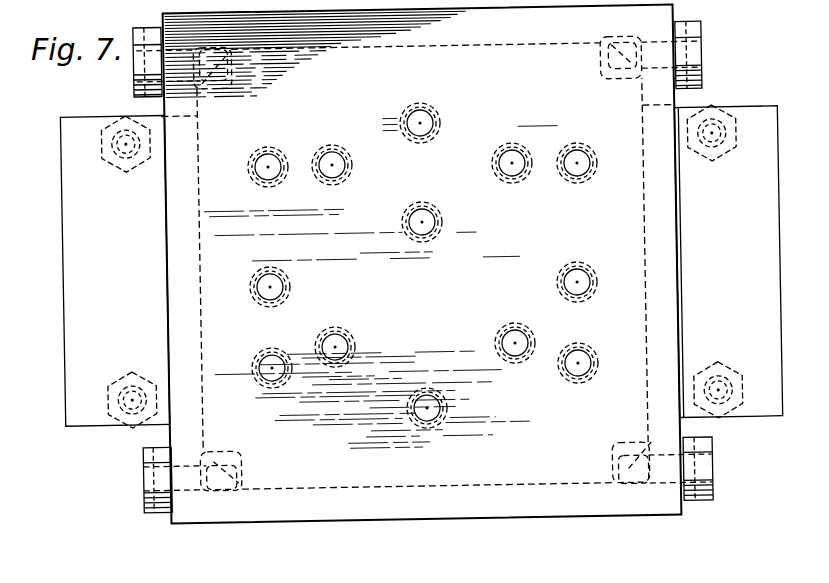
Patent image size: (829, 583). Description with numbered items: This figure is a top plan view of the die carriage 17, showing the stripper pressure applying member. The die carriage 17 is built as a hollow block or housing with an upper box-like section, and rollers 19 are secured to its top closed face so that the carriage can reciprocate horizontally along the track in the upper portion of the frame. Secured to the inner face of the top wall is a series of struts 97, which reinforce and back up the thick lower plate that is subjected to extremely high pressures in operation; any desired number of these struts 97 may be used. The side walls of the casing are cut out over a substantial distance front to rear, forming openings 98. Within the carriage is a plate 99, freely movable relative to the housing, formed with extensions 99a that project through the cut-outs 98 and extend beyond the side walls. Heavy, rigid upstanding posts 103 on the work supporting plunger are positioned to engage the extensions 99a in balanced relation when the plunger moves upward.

The die holder or carriage 17 is at (664, 507).
The rollers 19 is at (695, 31).
The struts 97 is at (422, 123).
The cut-outs or openings 98 is at (169, 424).
The plate 99 is at (298, 472).
The extensions 99a is at (773, 106).
The upstanding posts 103 is at (129, 155).